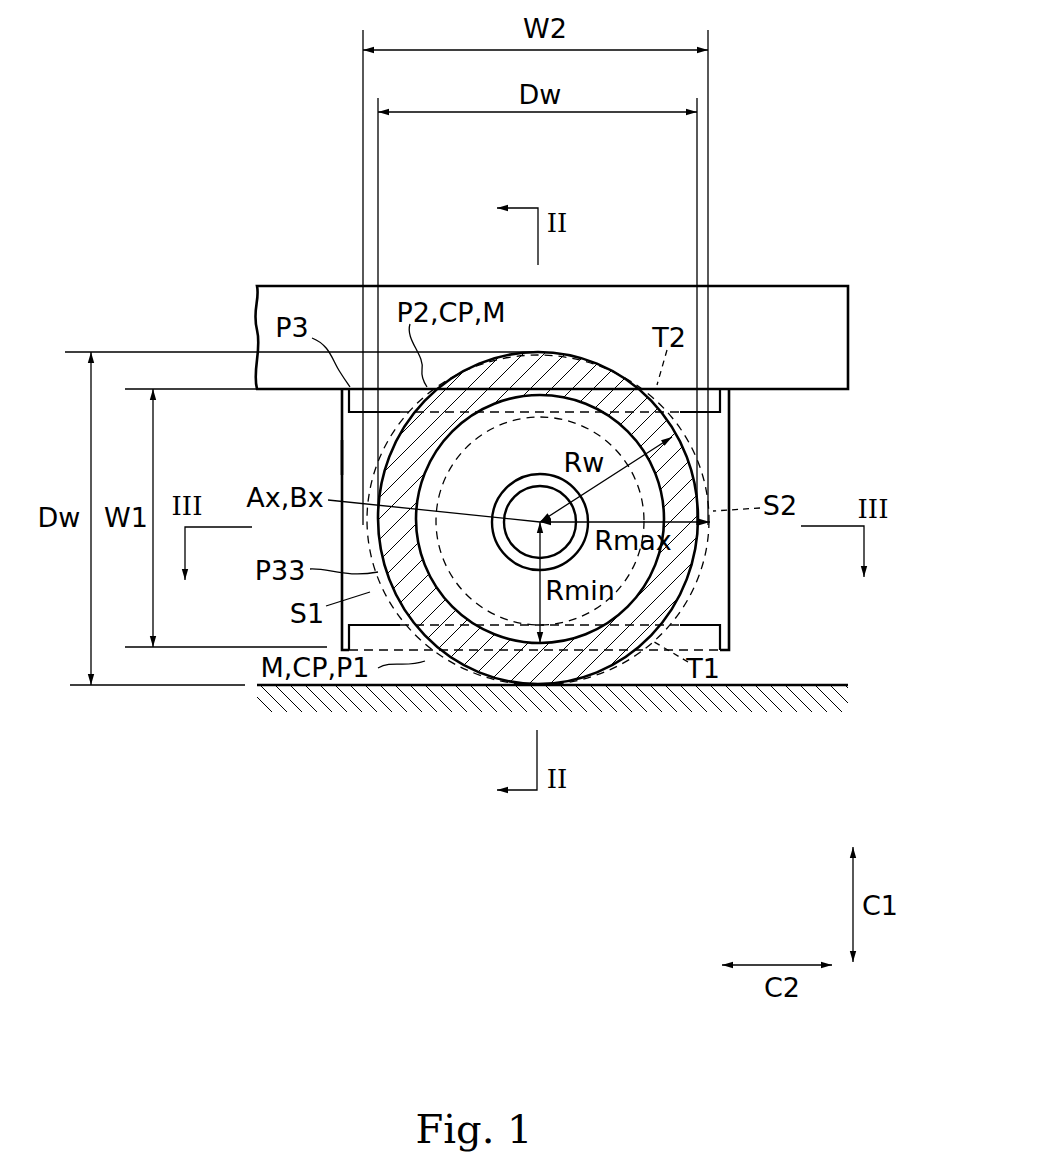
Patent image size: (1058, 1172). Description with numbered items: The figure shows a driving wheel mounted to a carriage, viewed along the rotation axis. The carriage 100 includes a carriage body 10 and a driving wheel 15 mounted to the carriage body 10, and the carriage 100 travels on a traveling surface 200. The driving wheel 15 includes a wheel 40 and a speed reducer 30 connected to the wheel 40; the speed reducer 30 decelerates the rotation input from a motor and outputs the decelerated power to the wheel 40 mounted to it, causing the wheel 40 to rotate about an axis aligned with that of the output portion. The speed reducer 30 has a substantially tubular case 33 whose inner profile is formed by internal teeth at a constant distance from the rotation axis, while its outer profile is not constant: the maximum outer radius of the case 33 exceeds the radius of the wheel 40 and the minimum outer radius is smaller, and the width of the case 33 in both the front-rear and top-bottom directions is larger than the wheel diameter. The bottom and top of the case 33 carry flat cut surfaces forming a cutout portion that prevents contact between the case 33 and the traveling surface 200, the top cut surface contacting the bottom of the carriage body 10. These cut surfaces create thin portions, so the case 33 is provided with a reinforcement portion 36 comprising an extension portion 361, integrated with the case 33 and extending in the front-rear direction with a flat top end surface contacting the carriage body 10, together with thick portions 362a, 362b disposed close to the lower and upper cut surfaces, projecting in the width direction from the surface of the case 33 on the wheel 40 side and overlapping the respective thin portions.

The carriage 100 is at (760, 157).
The carriage body 10 is at (808, 298).
The driving wheel 15 is at (350, 747).
The speed reducer 30 is at (729, 470).
The case 33 is at (342, 457).
The reinforcement portion 36 is at (586, 519).
The extension portion 361 is at (715, 590).
The thick portion 362a is at (708, 632).
The thick portion 362b is at (729, 408).
The wheel 40 is at (458, 665).
The traveling surface 200 is at (814, 685).